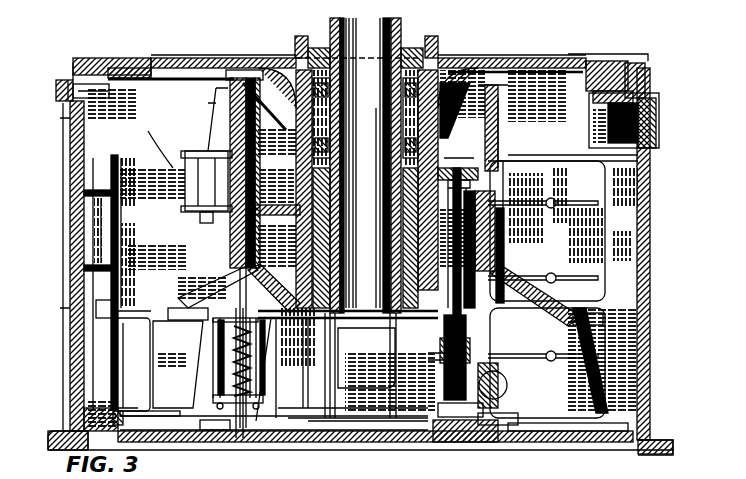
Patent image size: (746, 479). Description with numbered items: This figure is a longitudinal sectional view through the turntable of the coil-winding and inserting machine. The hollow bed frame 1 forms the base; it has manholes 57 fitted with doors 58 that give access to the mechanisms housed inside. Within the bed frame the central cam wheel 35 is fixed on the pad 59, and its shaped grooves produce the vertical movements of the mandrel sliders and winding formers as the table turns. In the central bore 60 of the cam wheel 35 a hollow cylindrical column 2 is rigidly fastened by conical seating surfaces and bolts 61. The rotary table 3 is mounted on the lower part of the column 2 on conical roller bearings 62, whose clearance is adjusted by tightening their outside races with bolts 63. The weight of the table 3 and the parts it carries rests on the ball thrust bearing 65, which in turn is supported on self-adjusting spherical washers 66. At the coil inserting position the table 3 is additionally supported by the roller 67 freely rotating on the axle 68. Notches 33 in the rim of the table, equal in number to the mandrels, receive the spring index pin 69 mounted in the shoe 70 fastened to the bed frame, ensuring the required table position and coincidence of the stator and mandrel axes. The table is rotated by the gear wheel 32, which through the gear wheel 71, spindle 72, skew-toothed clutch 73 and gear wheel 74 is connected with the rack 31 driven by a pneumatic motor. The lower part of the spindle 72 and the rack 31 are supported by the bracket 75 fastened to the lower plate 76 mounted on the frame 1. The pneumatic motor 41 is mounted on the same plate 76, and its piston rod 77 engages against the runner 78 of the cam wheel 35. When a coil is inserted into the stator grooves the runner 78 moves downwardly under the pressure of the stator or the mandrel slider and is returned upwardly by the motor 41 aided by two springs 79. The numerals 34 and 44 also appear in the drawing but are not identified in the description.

The bed frame 1 is at (70, 430).
The hollow cylindrical column 2 is at (395, 28).
The rotary table 3 is at (118, 48).
The rack 31 is at (499, 372).
The gear wheel 32 is at (282, 152).
The notches 33 is at (592, 53).
The bracket 34 is at (154, 184).
The central cam wheel 35 is at (495, 225).
The pneumatic motor 41 is at (185, 372).
The sheet 44 is at (458, 471).
The manholes 57 is at (62, 160).
The doors 58 is at (62, 130).
The pad 59 is at (620, 295).
The central bore 60 is at (505, 253).
The bolts 61 is at (320, 290).
The conical roller bearings 62 is at (440, 112).
The bolts 63 is at (430, 40).
The ball thrust bearing 65 is at (436, 158).
The self-adjusting spherical washers 66 is at (345, 345).
The roller 67 is at (122, 50).
The axle 68 is at (82, 50).
The spring index pin 69 is at (622, 75).
The shoe 70 is at (630, 118).
The gear wheel 71 is at (500, 150).
The spindle 72 is at (490, 182).
The skew-toothed clutch 73 is at (495, 343).
The gear wheel 74 is at (436, 368).
The bracket 75 is at (500, 404).
The lower plate 76 is at (135, 400).
The piston rod 77 is at (210, 265).
The runner 78 is at (200, 175).
The springs 79 is at (190, 320).